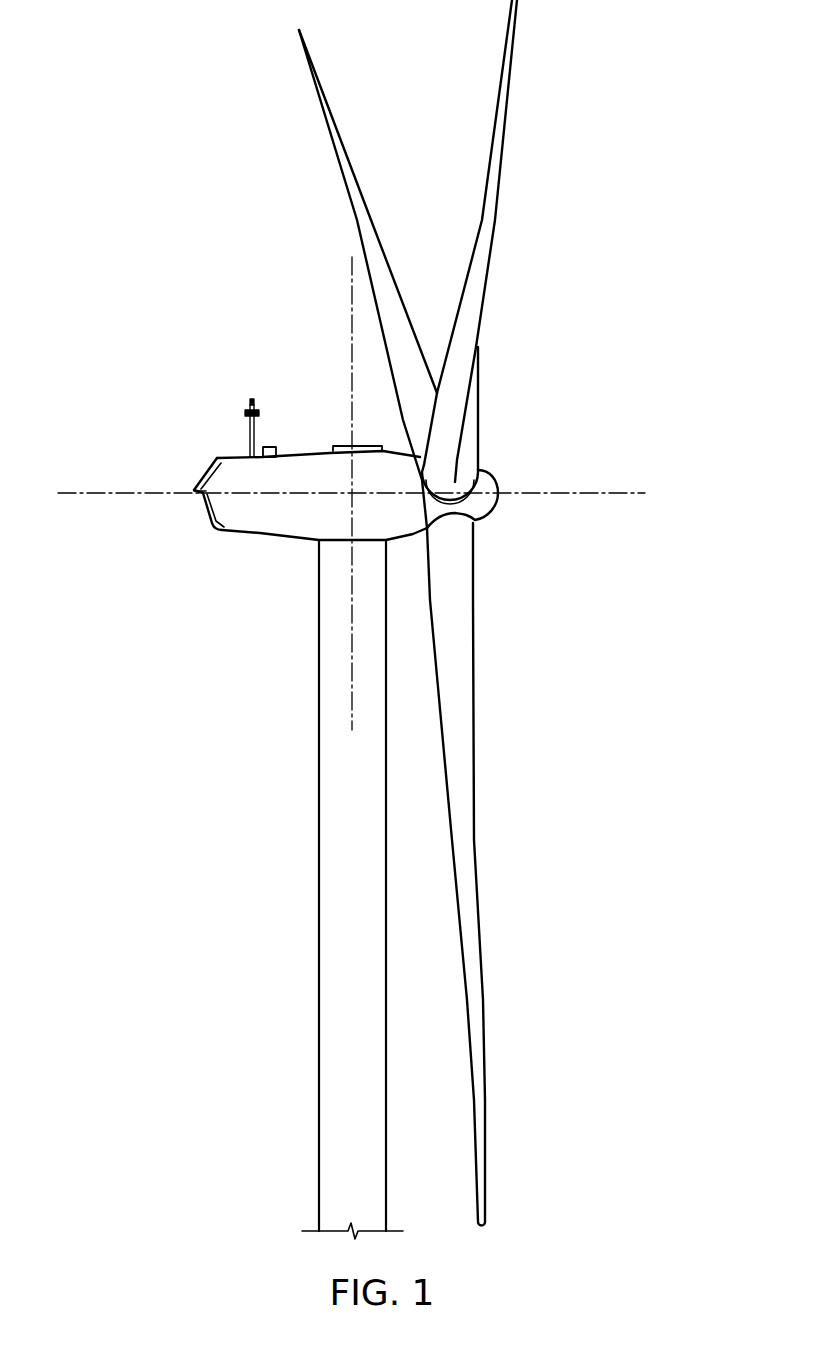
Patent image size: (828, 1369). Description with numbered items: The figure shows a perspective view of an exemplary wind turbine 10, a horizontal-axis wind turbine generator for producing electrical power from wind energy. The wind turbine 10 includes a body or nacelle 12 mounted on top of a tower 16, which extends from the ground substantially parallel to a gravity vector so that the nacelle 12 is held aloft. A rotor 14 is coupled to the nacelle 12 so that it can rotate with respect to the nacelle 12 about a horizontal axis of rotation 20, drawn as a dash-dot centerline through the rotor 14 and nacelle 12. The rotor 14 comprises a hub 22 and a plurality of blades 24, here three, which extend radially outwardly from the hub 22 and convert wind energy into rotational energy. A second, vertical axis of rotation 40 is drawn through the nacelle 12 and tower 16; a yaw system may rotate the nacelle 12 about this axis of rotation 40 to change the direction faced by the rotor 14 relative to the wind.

The wind turbine 10 is at (372, 619).
The nacelle 12 is at (240, 533).
The rotor 14 is at (437, 613).
The tower 16 is at (318, 862).
The axis of rotation 20 is at (627, 493).
The hub 22 is at (498, 497).
The blades 24 is at (320, 72).
The axis of rotation 40 is at (350, 308).